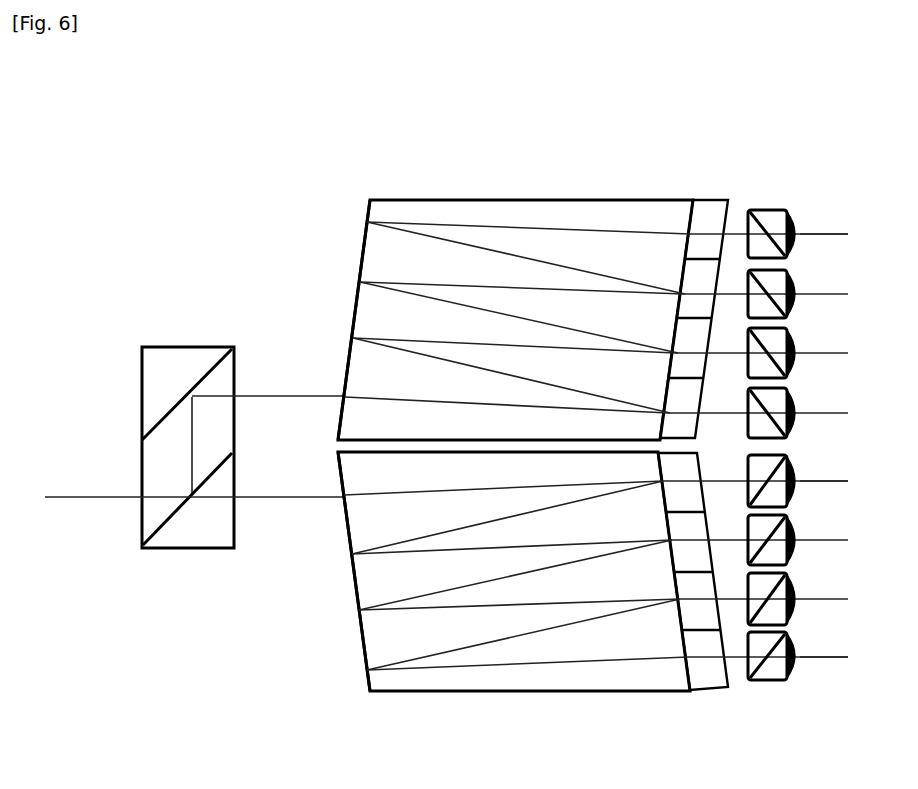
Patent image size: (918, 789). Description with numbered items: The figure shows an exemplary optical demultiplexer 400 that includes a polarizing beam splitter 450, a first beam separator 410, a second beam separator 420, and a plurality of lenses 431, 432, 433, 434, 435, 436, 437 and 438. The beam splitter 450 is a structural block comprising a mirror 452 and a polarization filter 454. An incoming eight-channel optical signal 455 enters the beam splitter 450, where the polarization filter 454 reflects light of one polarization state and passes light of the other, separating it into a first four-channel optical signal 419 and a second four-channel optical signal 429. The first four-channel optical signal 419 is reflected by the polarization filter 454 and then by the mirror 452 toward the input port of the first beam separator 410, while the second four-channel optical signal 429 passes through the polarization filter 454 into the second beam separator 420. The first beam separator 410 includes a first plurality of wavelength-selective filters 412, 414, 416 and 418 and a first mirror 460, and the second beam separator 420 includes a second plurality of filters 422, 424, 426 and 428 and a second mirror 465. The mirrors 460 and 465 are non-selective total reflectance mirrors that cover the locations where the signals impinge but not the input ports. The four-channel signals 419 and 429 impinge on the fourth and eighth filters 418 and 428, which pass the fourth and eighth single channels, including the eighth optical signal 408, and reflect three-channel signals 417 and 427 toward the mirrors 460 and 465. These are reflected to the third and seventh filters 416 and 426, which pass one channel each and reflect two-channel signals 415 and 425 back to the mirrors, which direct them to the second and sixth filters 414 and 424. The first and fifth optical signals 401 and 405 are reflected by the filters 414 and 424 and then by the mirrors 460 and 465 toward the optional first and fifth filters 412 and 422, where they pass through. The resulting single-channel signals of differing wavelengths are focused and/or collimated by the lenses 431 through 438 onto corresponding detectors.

The optical demultiplexer 400 is at (250, 108).
The first optical signal 401 is at (823, 242).
The fifth optical signal 405 is at (822, 663).
The eighth optical signal 408 is at (835, 482).
The first beam separator 410 is at (517, 198).
The first filter 412 is at (712, 200).
The second filter 414 is at (680, 273).
The two-channel optical signal 415 is at (455, 282).
The third filter 416 is at (672, 333).
The three-channel optical signal 417 is at (450, 338).
The fourth filter 418 is at (665, 392).
The first 4-channel optical signal 419 is at (440, 397).
The second beam separator 420 is at (470, 693).
The fifth filter 422 is at (712, 688).
The sixth filter 424 is at (680, 618).
The two-channel optical signal 425 is at (445, 612).
The seventh filter 426 is at (665, 560).
The three-channel optical signal 427 is at (440, 553).
The eighth filter 428 is at (665, 500).
The second 4-channel optical signal 429 is at (440, 497).
The first lens 431 is at (770, 210).
The second lens 432 is at (790, 278).
The third lens 433 is at (792, 338).
The fourth lens 434 is at (792, 398).
The fifth lens 435 is at (770, 682).
The sixth lens 436 is at (797, 620).
The seventh lens 437 is at (797, 555).
The eighth lens 438 is at (797, 497).
The polarizing beam splitter 450 is at (150, 452).
The mirror 452 is at (172, 405).
The polarization filter 454 is at (170, 525).
The 8-channel optical signal 455 is at (128, 500).
The first mirror 460 is at (362, 232).
The second mirror 465 is at (357, 640).